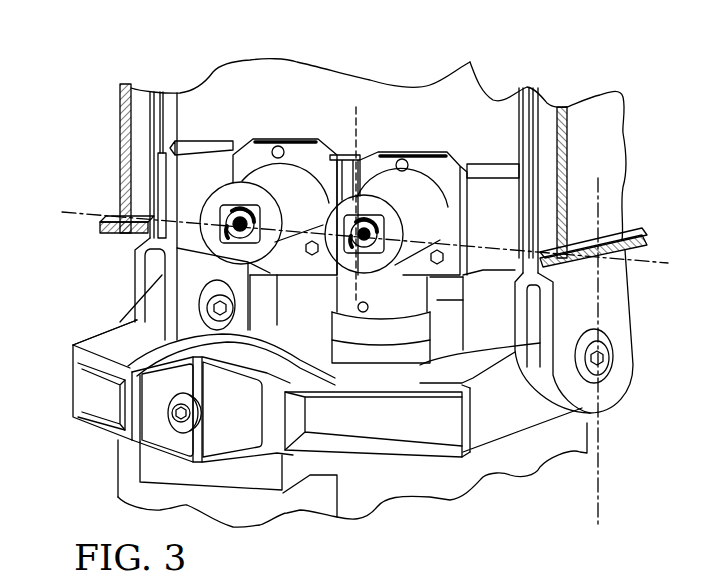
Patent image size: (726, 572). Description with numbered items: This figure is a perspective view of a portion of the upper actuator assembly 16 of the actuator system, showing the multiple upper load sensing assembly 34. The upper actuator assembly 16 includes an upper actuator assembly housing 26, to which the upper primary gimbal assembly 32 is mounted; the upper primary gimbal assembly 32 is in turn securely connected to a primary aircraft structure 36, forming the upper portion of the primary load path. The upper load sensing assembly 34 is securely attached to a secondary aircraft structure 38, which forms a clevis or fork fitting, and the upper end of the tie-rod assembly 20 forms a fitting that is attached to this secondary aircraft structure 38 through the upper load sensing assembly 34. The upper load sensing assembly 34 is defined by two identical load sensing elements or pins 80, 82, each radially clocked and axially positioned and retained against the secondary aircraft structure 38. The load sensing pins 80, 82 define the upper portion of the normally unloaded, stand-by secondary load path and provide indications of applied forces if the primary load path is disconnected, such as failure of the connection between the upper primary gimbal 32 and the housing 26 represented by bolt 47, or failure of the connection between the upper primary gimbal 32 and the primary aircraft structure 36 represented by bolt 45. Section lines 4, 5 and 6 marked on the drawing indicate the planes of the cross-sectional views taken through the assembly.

The upper actuator assembly 16 is at (64, 388).
The tie-rod assembly 20 is at (437, 296).
The upper actuator assembly housing 26 is at (423, 498).
The upper primary gimbal assembly 32 is at (94, 329).
The upper load sensing assembly 34 is at (307, 162).
The primary aircraft structure 36 is at (568, 133).
The secondary aircraft structure 38 is at (214, 69).
The bolt 45 is at (607, 361).
The bolt 47 is at (178, 423).
The load sensing element 80 is at (256, 170).
The load sensing element 82 is at (382, 191).
The section line 4- 4 is at (333, 118).
The section line 5- 5 is at (78, 247).
The section line 6- 6 is at (652, 158).